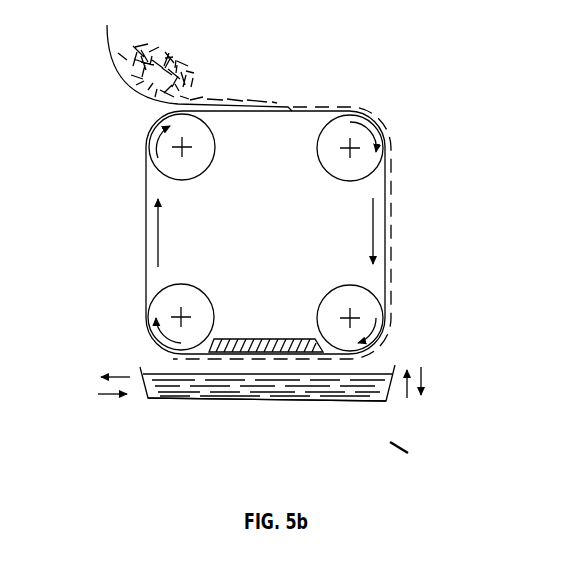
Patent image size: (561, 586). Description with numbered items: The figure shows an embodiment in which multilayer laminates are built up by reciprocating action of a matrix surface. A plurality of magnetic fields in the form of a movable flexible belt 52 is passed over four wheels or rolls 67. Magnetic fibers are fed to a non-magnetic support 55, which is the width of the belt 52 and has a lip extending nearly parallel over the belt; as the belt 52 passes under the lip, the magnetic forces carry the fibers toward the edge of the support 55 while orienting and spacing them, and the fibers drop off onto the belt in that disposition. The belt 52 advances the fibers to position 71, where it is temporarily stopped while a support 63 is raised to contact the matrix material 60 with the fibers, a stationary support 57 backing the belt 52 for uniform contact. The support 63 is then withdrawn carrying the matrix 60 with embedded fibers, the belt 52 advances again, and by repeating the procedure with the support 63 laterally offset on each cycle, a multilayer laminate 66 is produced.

The non-magnetic support 55 is at (116, 82).
The movable flexible belt 52 is at (140, 218).
The wheels or rolls 67 is at (214, 170).
The stationary support 57 is at (258, 335).
The matrix material 60 is at (382, 368).
The multilayer laminate 66 is at (330, 396).
The support 63 is at (206, 401).
The position 71 is at (174, 360).